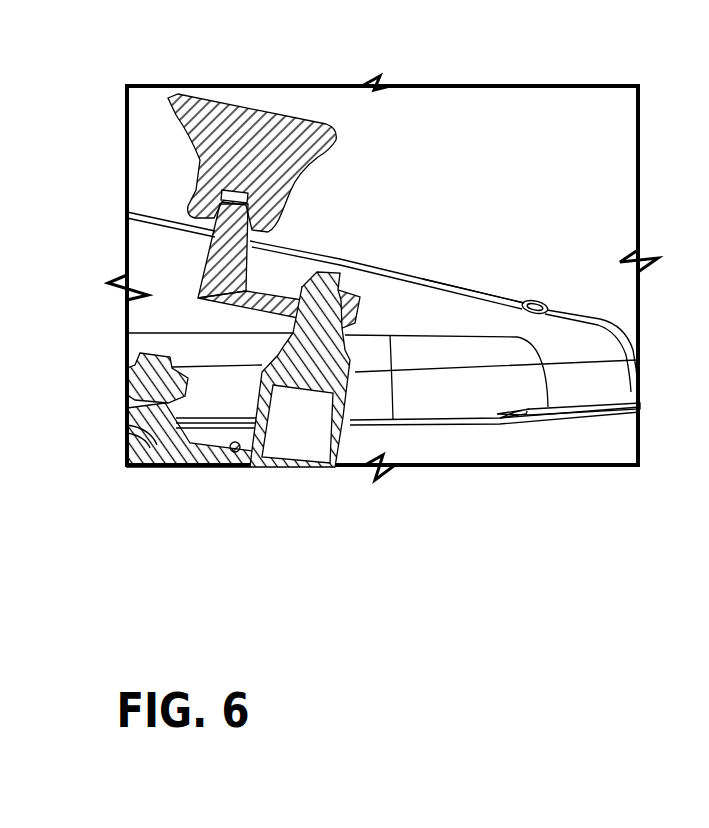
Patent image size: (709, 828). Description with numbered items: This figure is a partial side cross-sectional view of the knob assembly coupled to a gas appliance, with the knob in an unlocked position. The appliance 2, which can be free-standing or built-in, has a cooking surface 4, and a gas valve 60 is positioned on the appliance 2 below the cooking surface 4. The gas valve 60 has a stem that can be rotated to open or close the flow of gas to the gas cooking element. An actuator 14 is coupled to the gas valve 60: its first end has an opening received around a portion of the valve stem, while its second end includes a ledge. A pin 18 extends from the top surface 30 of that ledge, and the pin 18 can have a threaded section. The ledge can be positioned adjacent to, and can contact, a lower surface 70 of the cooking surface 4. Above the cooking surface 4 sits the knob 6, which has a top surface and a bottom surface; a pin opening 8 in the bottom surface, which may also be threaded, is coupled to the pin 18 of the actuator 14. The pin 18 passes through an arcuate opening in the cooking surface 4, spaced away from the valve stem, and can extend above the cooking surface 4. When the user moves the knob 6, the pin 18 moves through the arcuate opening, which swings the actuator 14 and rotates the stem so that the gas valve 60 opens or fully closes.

The appliance 2 is at (597, 347).
The cooking surface 4 is at (417, 273).
The knob 6 is at (320, 154).
The pin opening 8 is at (238, 196).
The actuator 14 is at (257, 308).
The pin 18 is at (217, 217).
The top surface 30 is at (245, 242).
The gas valve 60 is at (335, 370).
The lower surface 70 is at (213, 235).